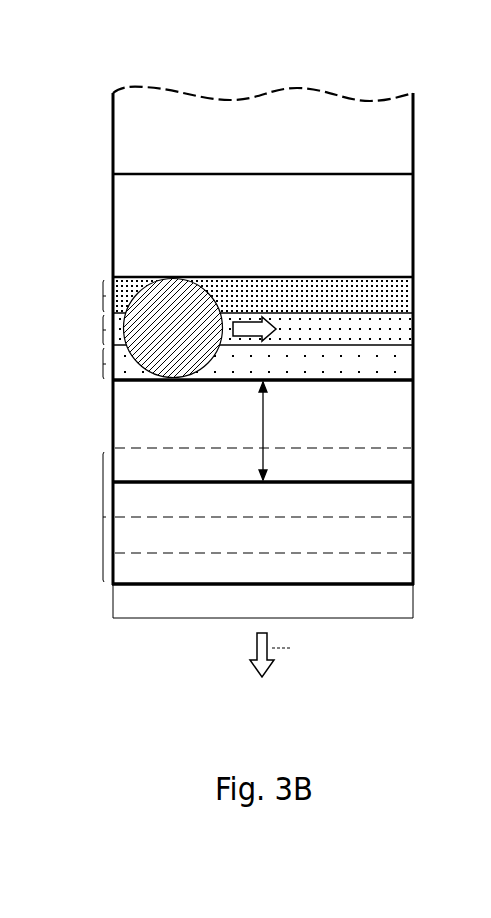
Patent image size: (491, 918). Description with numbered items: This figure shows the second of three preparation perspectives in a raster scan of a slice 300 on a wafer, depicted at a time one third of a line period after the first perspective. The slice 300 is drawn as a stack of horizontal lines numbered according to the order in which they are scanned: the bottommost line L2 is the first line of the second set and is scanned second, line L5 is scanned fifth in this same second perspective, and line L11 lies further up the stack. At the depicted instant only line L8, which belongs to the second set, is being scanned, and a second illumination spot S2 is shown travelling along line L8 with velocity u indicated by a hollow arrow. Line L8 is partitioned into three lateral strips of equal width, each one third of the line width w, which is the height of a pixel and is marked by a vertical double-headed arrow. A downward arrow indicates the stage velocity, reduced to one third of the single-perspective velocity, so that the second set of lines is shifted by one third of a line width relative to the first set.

The slice 300 is at (112, 113).
The second illumination spot S2 is at (170, 277).
The line L11 is at (420, 176).
The line L8 is at (420, 279).
The line L5 is at (420, 383).
The line L2 is at (420, 485).
The velocity of the illumination spots u is at (252, 338).
The line width w is at (261, 430).